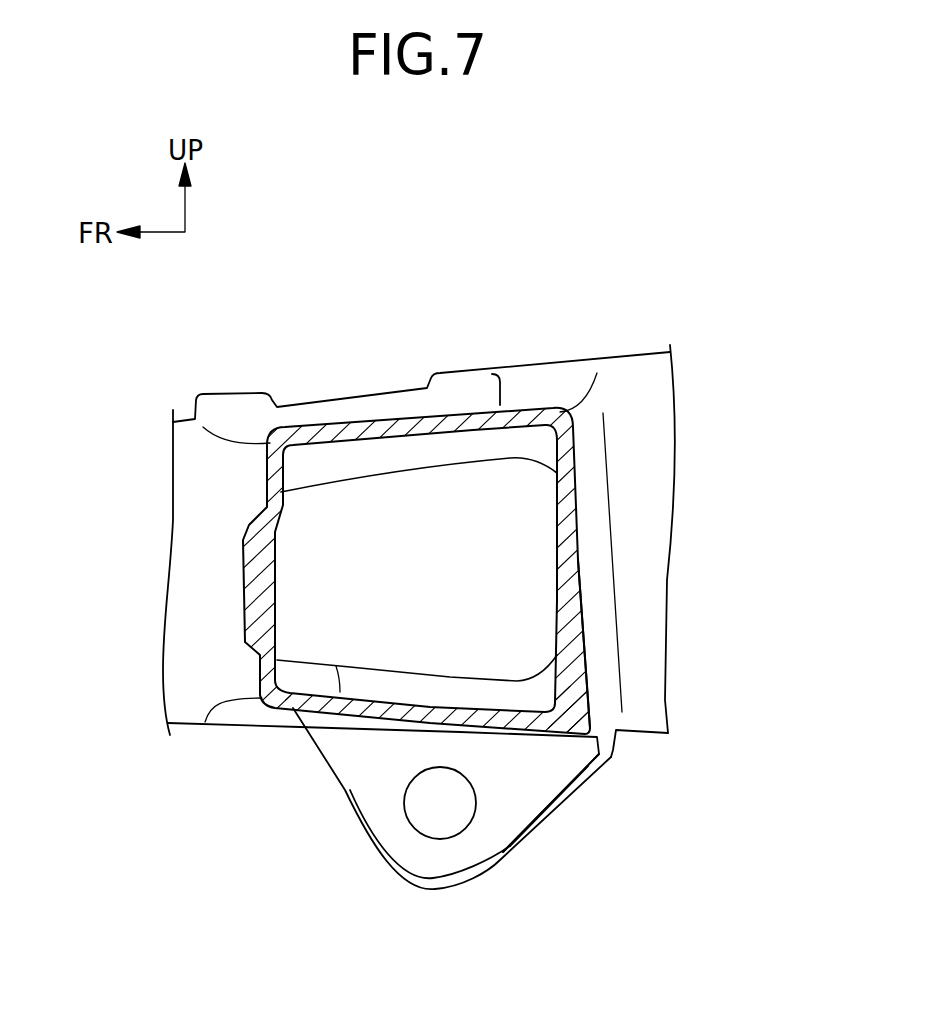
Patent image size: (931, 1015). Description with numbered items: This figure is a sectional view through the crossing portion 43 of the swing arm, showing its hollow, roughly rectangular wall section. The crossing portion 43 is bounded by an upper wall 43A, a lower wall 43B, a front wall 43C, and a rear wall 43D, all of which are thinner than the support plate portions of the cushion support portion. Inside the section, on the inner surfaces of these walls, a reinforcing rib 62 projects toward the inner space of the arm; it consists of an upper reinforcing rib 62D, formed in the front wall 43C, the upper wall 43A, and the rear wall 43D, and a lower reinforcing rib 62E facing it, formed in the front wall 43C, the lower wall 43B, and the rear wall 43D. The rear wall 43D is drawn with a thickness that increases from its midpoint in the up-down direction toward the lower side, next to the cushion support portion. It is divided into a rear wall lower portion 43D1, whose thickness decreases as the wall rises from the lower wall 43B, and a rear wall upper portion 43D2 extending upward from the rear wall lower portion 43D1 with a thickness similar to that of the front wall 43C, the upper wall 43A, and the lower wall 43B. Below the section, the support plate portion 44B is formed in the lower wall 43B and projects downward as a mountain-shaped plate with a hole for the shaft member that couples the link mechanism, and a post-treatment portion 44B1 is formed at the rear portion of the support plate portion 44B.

The crossing portion 43 is at (342, 410).
The upper wall 43A is at (405, 427).
The lower wall 43B is at (383, 732).
The front wall 43C is at (267, 505).
The rear wall 43D is at (577, 515).
The rear wall lower portion 43D1 is at (440, 690).
The rear wall upper portion 43D2 is at (575, 450).
The reinforcing rib 62 is at (432, 467).
The upper reinforcing rib 62D is at (447, 450).
The lower reinforcing rib 62E is at (462, 687).
The support plate portion 44B is at (437, 862).
The post-treatment portion 44B1 is at (555, 815).